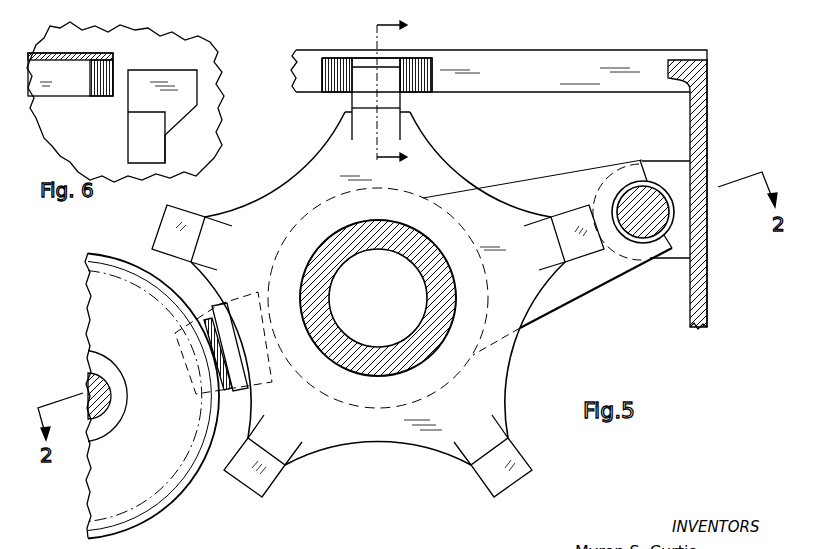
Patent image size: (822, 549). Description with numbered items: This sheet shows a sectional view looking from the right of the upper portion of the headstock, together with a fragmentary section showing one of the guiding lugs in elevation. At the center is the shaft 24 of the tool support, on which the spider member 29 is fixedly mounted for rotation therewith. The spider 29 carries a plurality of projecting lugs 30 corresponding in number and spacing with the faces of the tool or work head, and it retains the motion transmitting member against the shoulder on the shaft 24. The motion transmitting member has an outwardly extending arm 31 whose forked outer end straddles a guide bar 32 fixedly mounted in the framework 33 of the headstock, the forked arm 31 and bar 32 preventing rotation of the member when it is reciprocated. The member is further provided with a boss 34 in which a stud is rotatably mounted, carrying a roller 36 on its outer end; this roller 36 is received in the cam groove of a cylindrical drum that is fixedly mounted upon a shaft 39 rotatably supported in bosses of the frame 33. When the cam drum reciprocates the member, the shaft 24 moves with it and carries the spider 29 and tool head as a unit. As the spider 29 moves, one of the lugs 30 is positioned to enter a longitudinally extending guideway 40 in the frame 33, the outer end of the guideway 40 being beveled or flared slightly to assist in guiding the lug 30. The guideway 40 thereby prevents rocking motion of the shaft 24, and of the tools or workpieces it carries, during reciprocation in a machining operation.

In FIG. 5, the shaft 24 is at (367, 263).
In FIG. 6, the spider member 29 is at (135, 137).
In FIG. 5, the spider member 29 is at (372, 427).
In FIG. 6, the projecting lugs 30 is at (180, 78).
In FIG. 5, the projecting lugs 30 is at (360, 98).
In FIG. 5, the outwardly extending arm 31 is at (580, 183).
In FIG. 5, the guide bar 32 is at (662, 192).
In FIG. 6, the framework 33 is at (212, 112).
In FIG. 5, the boss 34 is at (281, 385).
In FIG. 5, the roller 36 is at (225, 392).
In FIG. 5, the shaft 39 is at (92, 378).
In FIG. 6, the guideway 40 is at (62, 78).
In FIG. 5, the guideway 40 is at (365, 62).